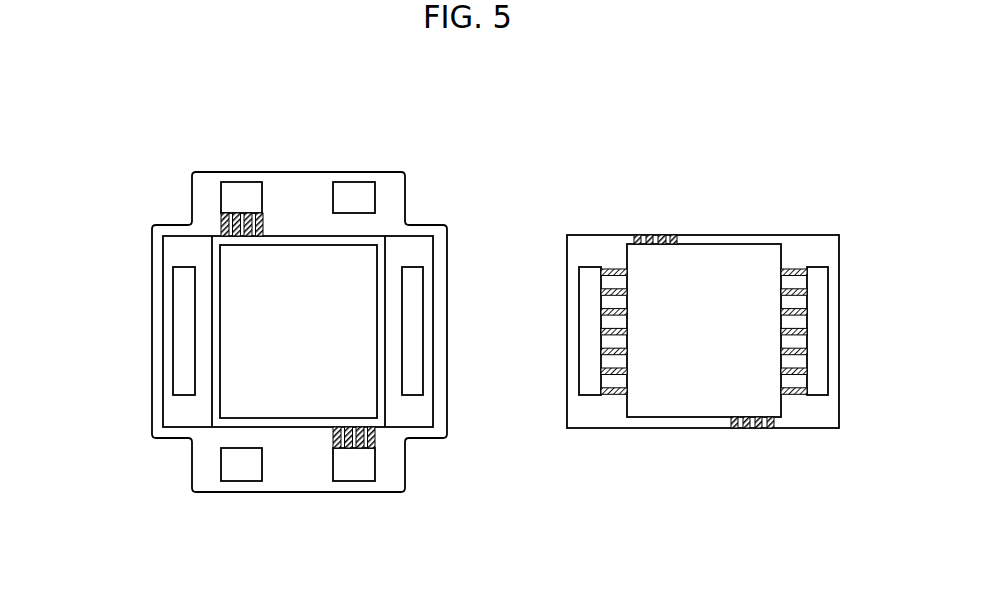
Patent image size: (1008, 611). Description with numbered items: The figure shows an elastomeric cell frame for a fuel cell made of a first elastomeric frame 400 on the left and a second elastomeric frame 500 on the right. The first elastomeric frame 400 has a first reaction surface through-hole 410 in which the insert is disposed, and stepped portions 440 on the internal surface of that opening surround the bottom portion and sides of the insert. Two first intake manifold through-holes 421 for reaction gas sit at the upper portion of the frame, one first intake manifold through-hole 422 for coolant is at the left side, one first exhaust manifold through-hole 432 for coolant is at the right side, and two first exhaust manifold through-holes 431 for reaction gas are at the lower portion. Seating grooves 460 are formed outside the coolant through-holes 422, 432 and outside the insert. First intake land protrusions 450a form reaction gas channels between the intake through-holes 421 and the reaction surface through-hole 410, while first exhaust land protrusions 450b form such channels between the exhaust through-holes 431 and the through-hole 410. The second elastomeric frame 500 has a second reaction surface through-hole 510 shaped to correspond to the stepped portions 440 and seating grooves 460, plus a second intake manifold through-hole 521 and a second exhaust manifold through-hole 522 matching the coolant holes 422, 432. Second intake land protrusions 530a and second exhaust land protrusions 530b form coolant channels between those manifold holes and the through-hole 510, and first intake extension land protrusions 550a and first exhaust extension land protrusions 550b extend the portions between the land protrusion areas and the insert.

The first elastomeric frame 400 is at (440, 201).
The first reaction surface through-hole 410 is at (296, 275).
The first intake manifold through-holes 421 is at (241, 196).
The first intake manifold through-hole 422 is at (187, 336).
The first exhaust manifold through-holes 431 is at (242, 467).
The first exhaust manifold through-hole 432 is at (410, 336).
The stepped portions 440 is at (220, 410).
The first intake land protrusions 450a is at (222, 220).
The first exhaust land protrusions 450b is at (360, 450).
The seating grooves 460 is at (178, 420).
The second elastomeric frame 500 is at (770, 221).
The second reaction surface through-hole 510 is at (683, 268).
The second intake manifold through-hole 521 is at (596, 275).
The second exhaust manifold through-hole 522 is at (822, 275).
The second intake land protrusions 530a is at (620, 366).
The second exhaust land protrusions 530b is at (788, 366).
The first intake extension land protrusions 550a is at (660, 235).
The first exhaust extension land protrusions 550b is at (735, 428).